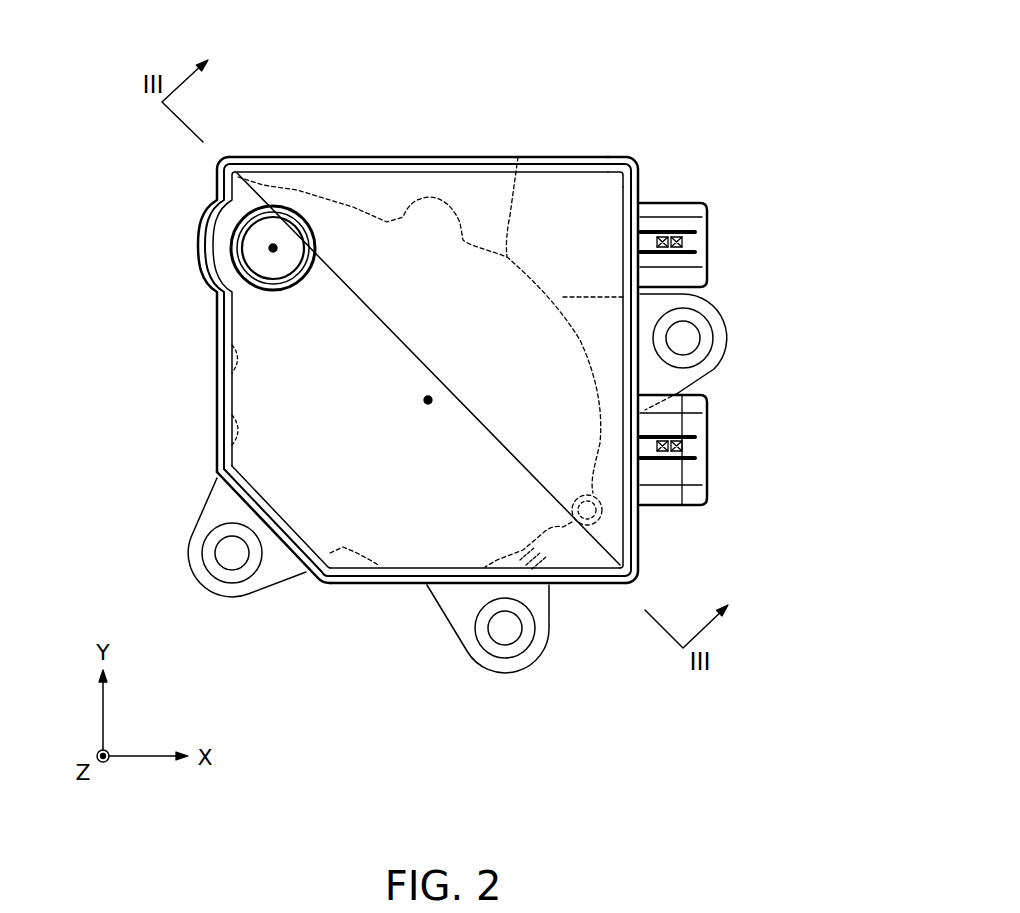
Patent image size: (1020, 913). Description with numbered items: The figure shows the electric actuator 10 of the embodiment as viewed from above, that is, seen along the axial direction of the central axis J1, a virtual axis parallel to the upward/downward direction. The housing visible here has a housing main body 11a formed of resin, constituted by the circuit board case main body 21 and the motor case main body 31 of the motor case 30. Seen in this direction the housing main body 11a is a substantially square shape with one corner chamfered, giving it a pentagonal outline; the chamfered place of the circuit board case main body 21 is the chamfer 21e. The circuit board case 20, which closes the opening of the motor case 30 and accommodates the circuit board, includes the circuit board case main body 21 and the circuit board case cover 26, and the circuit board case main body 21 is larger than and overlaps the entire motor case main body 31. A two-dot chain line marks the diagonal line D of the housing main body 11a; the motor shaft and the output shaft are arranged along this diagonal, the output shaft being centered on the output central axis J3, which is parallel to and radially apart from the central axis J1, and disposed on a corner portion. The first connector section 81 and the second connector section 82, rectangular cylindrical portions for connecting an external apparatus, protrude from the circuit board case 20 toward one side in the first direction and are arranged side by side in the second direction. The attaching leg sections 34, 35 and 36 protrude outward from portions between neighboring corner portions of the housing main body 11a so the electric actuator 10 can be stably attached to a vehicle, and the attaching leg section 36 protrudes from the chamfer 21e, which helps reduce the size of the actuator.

The electric actuator 10 is at (728, 108).
The circuit board case 20 is at (444, 150).
The circuit board case main body 21 is at (580, 157).
The chamfer 21e is at (313, 572).
The circuit board case cover 26 is at (595, 200).
The motor case 30 is at (356, 186).
The motor case main body 31 is at (518, 157).
The attaching leg section 34 is at (718, 366).
The attaching leg section 35 is at (519, 662).
The attaching leg section 36 is at (270, 566).
The first connector section 81 is at (700, 212).
The second connector section 82 is at (698, 477).
The housing main body 11a is at (203, 361).
The central axis J1 is at (428, 404).
The output central axis J3 is at (273, 248).
The diagonal line D is at (254, 157).